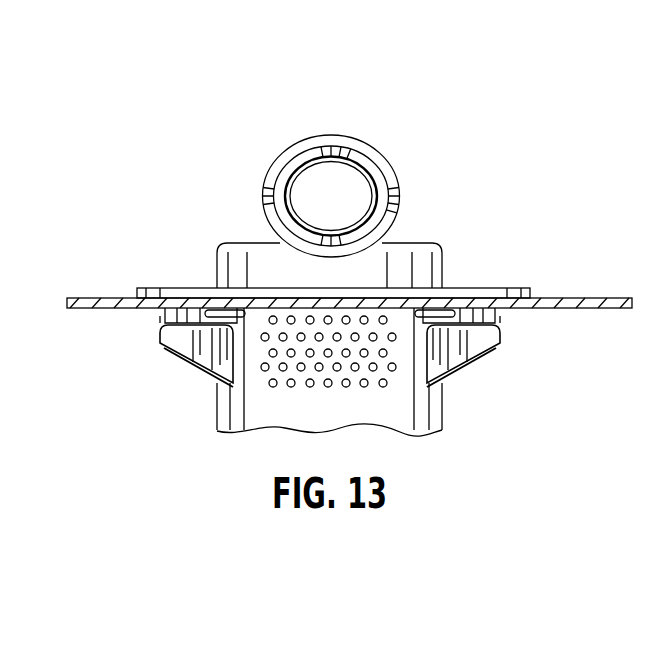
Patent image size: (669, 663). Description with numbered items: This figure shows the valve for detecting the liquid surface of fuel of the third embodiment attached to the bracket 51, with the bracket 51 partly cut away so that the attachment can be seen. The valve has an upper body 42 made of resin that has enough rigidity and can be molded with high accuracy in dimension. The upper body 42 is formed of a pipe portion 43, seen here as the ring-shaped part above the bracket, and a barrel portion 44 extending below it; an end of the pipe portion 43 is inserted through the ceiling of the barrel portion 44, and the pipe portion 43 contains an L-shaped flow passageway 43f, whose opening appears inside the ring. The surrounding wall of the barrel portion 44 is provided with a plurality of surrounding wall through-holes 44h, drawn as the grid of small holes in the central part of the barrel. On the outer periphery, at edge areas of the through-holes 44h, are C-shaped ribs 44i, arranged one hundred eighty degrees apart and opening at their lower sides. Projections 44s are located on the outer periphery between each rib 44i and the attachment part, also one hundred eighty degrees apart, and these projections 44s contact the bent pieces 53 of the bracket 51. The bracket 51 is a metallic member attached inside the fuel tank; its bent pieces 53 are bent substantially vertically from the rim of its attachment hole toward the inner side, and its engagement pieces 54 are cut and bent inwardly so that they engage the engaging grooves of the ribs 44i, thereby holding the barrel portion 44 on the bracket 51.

The upper body 42 is at (402, 178).
The pipe portion 43 is at (325, 136).
The L-shaped flow passageway 43f is at (312, 186).
The barrel portion 44 is at (408, 418).
The surrounding wall through-holes 44h is at (363, 388).
The projections 44s is at (192, 314).
The C-shaped ribs 44i is at (197, 355).
The bracket 51 is at (598, 298).
The bent pieces 53 is at (185, 313).
The engagement pieces 54 is at (160, 315).